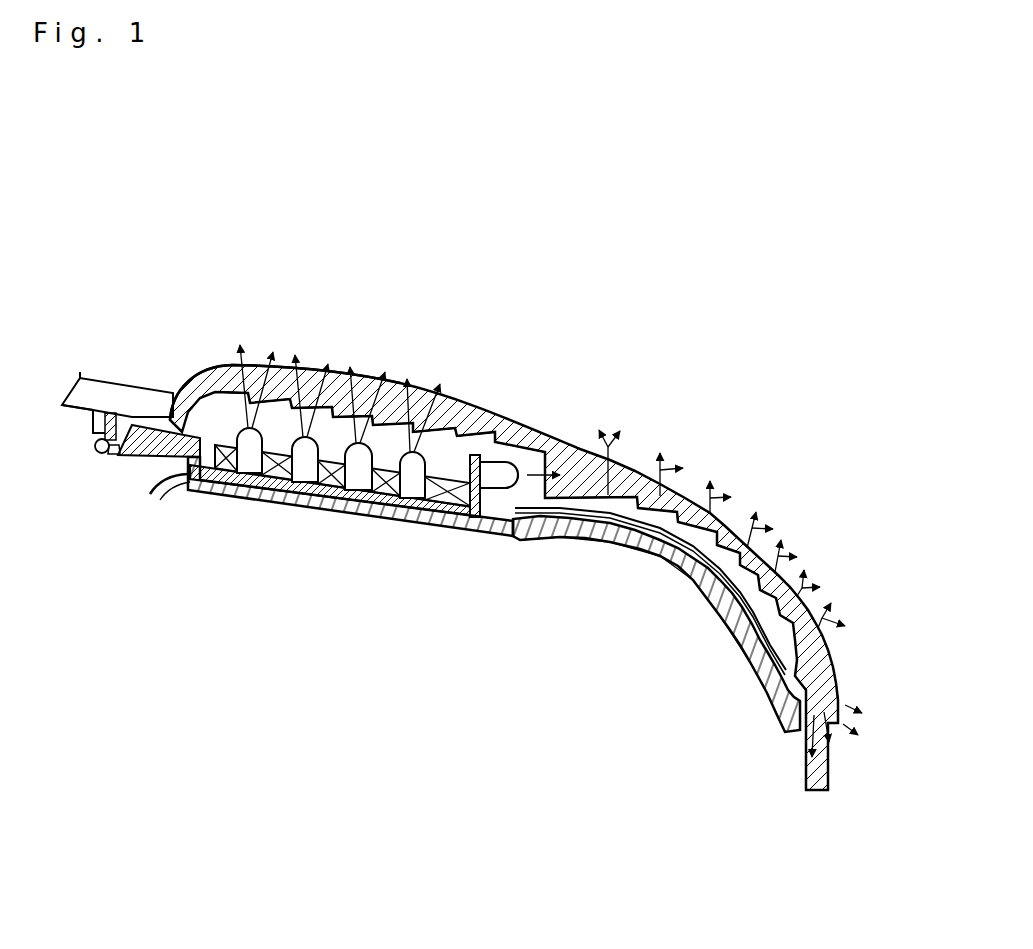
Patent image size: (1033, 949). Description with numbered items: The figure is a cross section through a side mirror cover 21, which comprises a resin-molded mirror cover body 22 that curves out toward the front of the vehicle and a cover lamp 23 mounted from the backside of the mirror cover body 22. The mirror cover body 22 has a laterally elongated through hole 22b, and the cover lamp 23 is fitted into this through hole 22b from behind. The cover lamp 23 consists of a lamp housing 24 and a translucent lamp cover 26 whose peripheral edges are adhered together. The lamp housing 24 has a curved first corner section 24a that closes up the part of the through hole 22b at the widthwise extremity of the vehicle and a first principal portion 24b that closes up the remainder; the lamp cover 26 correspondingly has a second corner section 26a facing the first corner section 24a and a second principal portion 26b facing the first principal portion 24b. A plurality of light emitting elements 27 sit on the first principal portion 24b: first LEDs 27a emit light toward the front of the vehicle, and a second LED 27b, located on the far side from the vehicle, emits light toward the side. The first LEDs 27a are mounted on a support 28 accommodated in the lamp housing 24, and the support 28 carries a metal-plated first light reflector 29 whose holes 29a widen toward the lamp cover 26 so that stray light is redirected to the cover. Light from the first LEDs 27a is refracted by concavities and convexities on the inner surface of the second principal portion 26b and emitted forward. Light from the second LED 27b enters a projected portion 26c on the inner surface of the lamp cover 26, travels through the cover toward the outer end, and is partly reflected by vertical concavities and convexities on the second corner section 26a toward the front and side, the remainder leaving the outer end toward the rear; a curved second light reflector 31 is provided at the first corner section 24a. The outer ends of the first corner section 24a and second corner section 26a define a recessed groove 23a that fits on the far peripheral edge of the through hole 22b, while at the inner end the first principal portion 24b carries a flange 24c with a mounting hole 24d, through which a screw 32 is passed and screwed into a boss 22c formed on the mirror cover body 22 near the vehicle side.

The side mirror cover 21 is at (210, 194).
The mirror cover body 22 is at (117, 378).
The through hole 22b is at (184, 376).
The boss 22c is at (88, 423).
The cover lamp 23 is at (562, 345).
The recessed groove 23a is at (808, 754).
The lamp housing 24 is at (517, 540).
The first corner section 24a is at (780, 733).
The first principal portion 24b is at (187, 515).
The flange 24c is at (93, 420).
The mounting hole 24d is at (115, 455).
The lamp cover 26 is at (542, 424).
The second corner section 26a is at (630, 400).
The second principal portion 26b is at (557, 385).
The projected portion 26c is at (581, 401).
The light emitting elements 27 is at (455, 420).
The first LED 27a is at (457, 430).
The second LED 27b is at (502, 462).
The support 28 is at (416, 516).
The first light reflector 29 is at (192, 470).
The holes 29a is at (250, 474).
The second light reflector 31 is at (790, 572).
The screw 32 is at (108, 458).